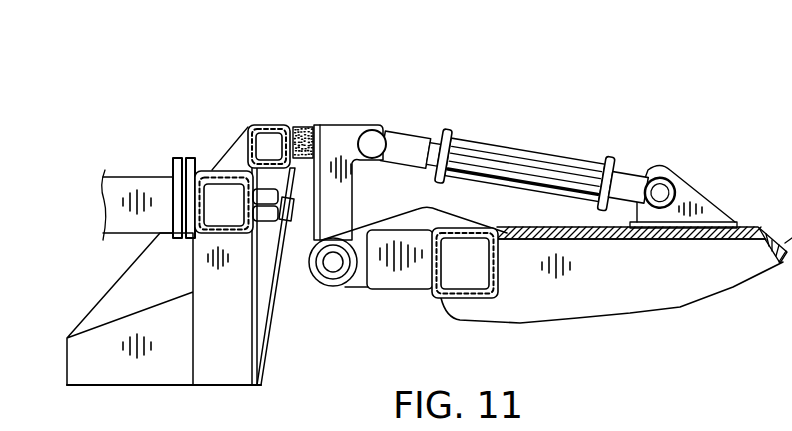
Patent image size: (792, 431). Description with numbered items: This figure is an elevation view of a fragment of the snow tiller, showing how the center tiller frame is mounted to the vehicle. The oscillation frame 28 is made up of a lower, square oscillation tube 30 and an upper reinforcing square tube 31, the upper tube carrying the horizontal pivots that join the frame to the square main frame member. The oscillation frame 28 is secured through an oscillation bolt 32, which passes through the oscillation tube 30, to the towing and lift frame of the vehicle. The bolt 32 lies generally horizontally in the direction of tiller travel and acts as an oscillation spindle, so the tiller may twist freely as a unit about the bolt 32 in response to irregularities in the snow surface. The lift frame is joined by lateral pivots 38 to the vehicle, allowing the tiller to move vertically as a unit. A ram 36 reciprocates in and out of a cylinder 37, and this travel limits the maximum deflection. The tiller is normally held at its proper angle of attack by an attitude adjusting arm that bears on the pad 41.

The oscillation frame 28 is at (218, 154).
The oscillation tube 30 is at (245, 236).
The reinforcing square tube 31 is at (262, 125).
The oscillation bolt 32 is at (307, 266).
The ram 36 is at (347, 138).
The cylinder 37 is at (545, 158).
The lateral pivot 38 is at (440, 137).
The pad 41 is at (305, 127).